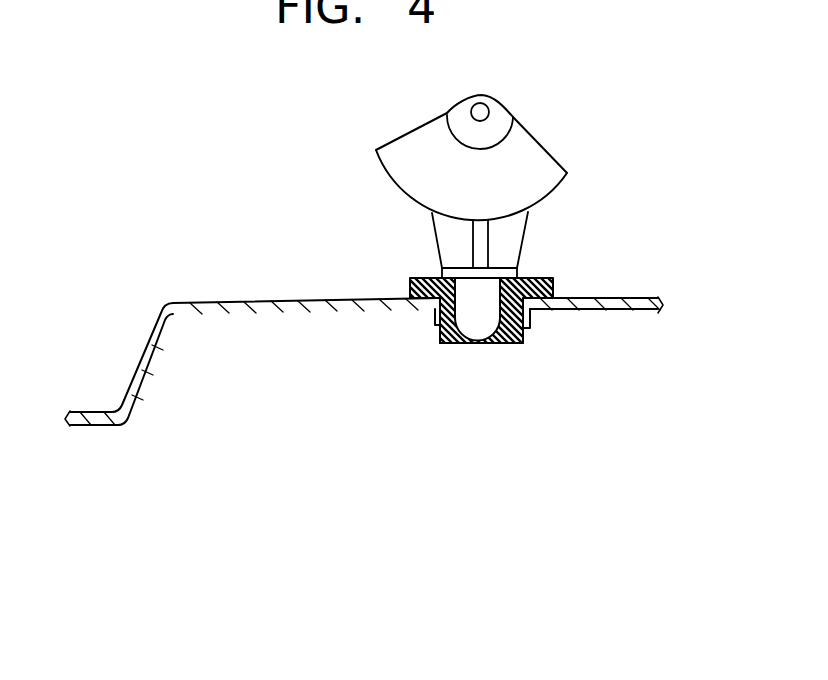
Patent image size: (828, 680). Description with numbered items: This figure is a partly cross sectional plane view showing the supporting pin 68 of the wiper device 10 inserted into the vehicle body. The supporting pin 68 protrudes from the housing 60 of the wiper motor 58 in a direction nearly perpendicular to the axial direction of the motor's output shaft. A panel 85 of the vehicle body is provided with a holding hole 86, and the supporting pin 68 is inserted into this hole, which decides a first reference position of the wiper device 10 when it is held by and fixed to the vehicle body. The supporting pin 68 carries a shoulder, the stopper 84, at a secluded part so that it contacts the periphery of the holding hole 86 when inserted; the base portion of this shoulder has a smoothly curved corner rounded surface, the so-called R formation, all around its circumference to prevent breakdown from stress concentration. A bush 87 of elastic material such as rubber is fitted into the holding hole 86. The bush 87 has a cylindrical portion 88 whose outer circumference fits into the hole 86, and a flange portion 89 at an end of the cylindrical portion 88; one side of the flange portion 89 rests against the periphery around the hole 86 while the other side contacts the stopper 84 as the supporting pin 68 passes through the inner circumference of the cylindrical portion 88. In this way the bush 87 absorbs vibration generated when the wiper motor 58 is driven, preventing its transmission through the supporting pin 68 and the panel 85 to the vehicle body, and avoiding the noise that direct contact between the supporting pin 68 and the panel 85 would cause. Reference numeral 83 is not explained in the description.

The wiper device 10 is at (318, 147).
The housing 60 is at (552, 157).
The wiper motor 58 is at (566, 193).
The stopper 84 is at (485, 340).
The panel 85 is at (290, 297).
The holding hole 86 is at (440, 342).
The supporting pin 68 is at (473, 335).
The bottom wall 83 is at (487, 340).
The cylindrical portion 88 is at (559, 354).
The flange portion 89 is at (547, 297).
The bush 87 is at (604, 370).
The R formation R is at (437, 298).